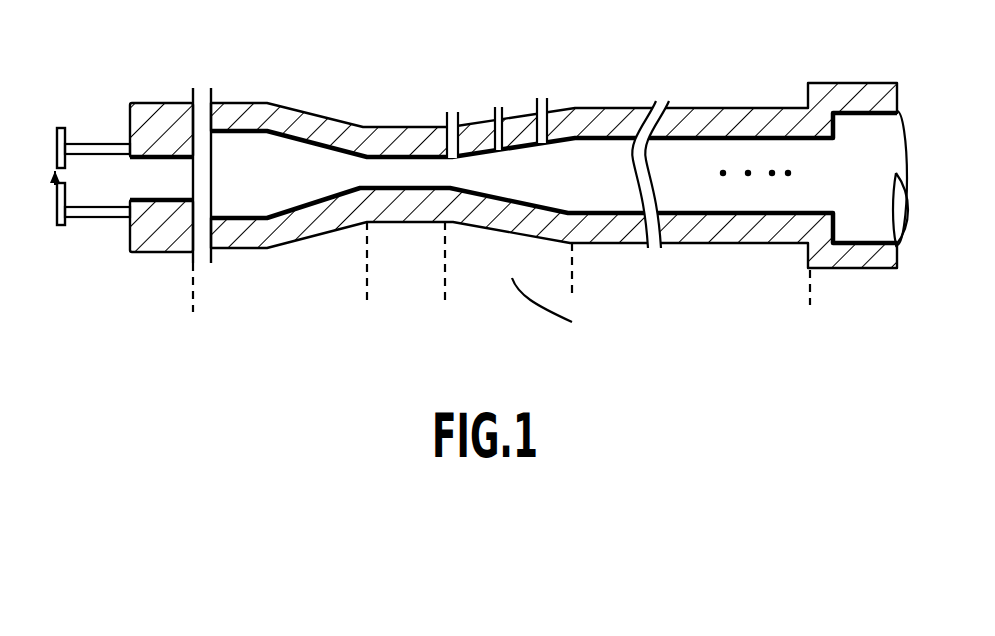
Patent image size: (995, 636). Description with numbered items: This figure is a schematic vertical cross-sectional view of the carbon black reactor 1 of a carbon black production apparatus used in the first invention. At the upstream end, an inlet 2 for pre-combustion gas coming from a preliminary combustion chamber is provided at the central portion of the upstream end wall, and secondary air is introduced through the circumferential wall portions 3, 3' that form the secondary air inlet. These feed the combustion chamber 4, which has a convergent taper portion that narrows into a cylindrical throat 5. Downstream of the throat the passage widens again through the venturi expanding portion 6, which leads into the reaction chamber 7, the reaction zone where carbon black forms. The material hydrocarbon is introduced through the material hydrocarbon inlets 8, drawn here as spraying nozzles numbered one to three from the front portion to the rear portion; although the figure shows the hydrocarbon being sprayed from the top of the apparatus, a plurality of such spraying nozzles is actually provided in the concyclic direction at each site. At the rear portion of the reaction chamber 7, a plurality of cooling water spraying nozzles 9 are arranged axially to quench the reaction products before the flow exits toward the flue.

The carbon black reactor 1 is at (612, 106).
The inlet of a pre-combustion gas 2 is at (103, 155).
The secondary air inlet 3 is at (169, 161).
The secondary air inlet circumferential wall portion 3' is at (175, 256).
The combustion chamber 4 is at (269, 258).
The throat 5 is at (439, 264).
The venturi expanding portion 6 is at (607, 282).
The reaction chamber 7 is at (727, 238).
The material hydrocarbon inlets 8 is at (538, 63).
The cooling water spraying nozzles 9 is at (800, 164).